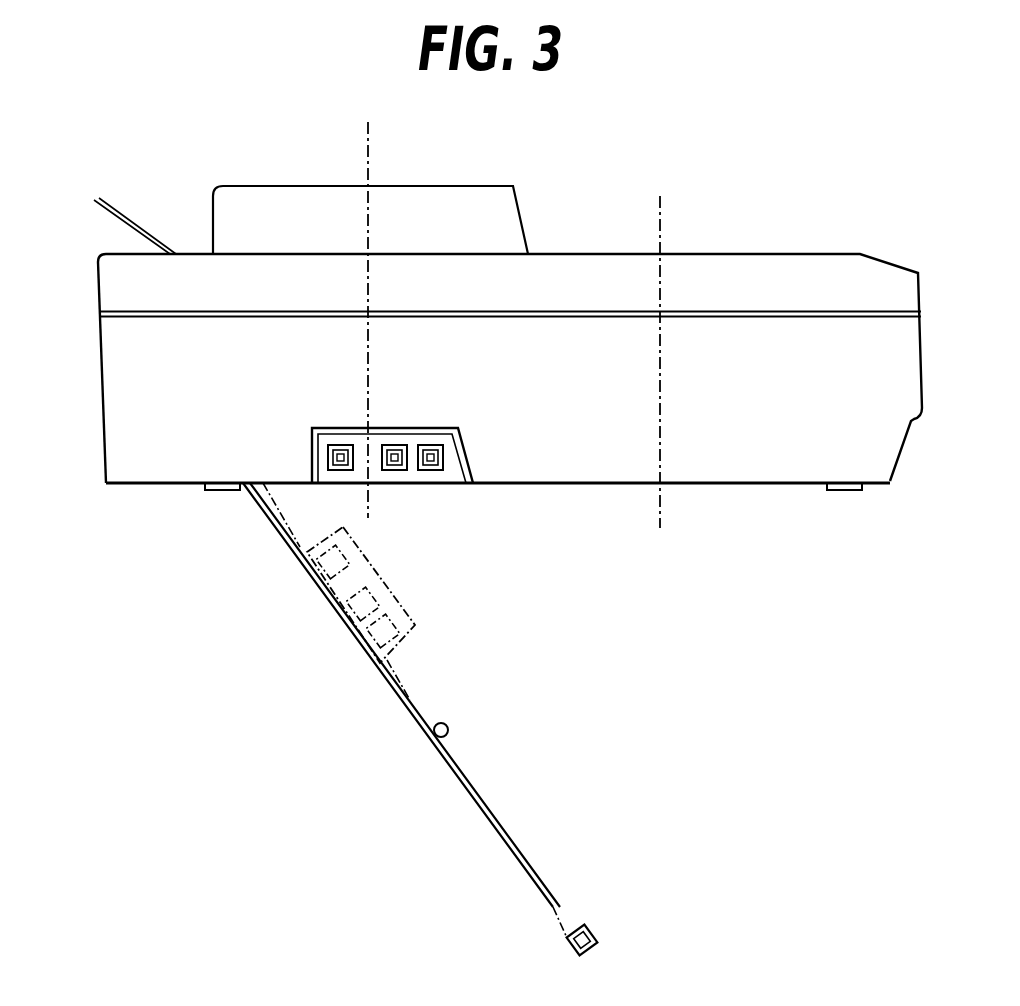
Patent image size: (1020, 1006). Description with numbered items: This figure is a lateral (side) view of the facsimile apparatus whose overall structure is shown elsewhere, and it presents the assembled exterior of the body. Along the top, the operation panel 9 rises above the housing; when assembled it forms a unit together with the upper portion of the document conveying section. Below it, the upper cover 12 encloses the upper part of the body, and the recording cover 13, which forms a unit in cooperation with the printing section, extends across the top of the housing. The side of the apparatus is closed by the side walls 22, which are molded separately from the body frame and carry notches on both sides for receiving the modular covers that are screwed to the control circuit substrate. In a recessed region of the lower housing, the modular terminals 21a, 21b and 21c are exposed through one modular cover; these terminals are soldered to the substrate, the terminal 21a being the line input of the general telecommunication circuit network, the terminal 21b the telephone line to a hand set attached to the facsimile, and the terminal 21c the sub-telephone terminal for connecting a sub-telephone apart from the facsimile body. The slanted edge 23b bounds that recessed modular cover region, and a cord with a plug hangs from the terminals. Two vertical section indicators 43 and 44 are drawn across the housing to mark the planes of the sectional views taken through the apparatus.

The operation panel 9 is at (468, 188).
The upper cover 12 is at (105, 275).
The recording cover 13 is at (712, 254).
The side walls 22 is at (743, 473).
The modular terminal 21a is at (328, 455).
The modular terminal 21b is at (445, 465).
The sub-telephone terminal 21c is at (410, 462).
The connector recess 23b is at (463, 477).
The section line 43 is at (368, 122).
The section line 44 is at (660, 196).